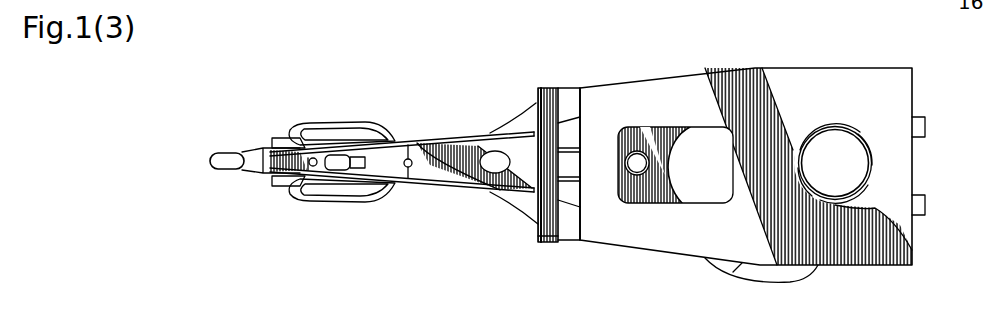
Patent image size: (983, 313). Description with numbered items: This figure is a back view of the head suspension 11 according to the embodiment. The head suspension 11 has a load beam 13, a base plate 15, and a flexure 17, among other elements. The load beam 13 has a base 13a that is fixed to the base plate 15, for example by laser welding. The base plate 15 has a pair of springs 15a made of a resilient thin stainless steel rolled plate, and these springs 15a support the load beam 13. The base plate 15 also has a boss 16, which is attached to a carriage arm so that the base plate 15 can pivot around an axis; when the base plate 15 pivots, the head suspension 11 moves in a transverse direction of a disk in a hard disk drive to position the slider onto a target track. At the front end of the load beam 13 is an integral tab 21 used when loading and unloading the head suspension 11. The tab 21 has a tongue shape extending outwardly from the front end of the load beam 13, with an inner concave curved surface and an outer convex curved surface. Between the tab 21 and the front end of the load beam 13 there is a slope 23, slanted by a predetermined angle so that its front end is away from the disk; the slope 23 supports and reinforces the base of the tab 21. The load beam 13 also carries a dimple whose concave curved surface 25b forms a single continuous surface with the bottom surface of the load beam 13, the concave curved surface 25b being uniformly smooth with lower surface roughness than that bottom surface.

The head suspension 11 is at (664, 65).
The load beam 13 is at (437, 143).
The base 13a is at (546, 88).
The base plate 15 is at (838, 80).
The springs 15a is at (567, 100).
The boss 16 is at (877, 173).
The flexure 17 is at (357, 123).
The tab 21 is at (210, 161).
The slope 23 is at (258, 153).
The concave curved surface 25b is at (312, 180).